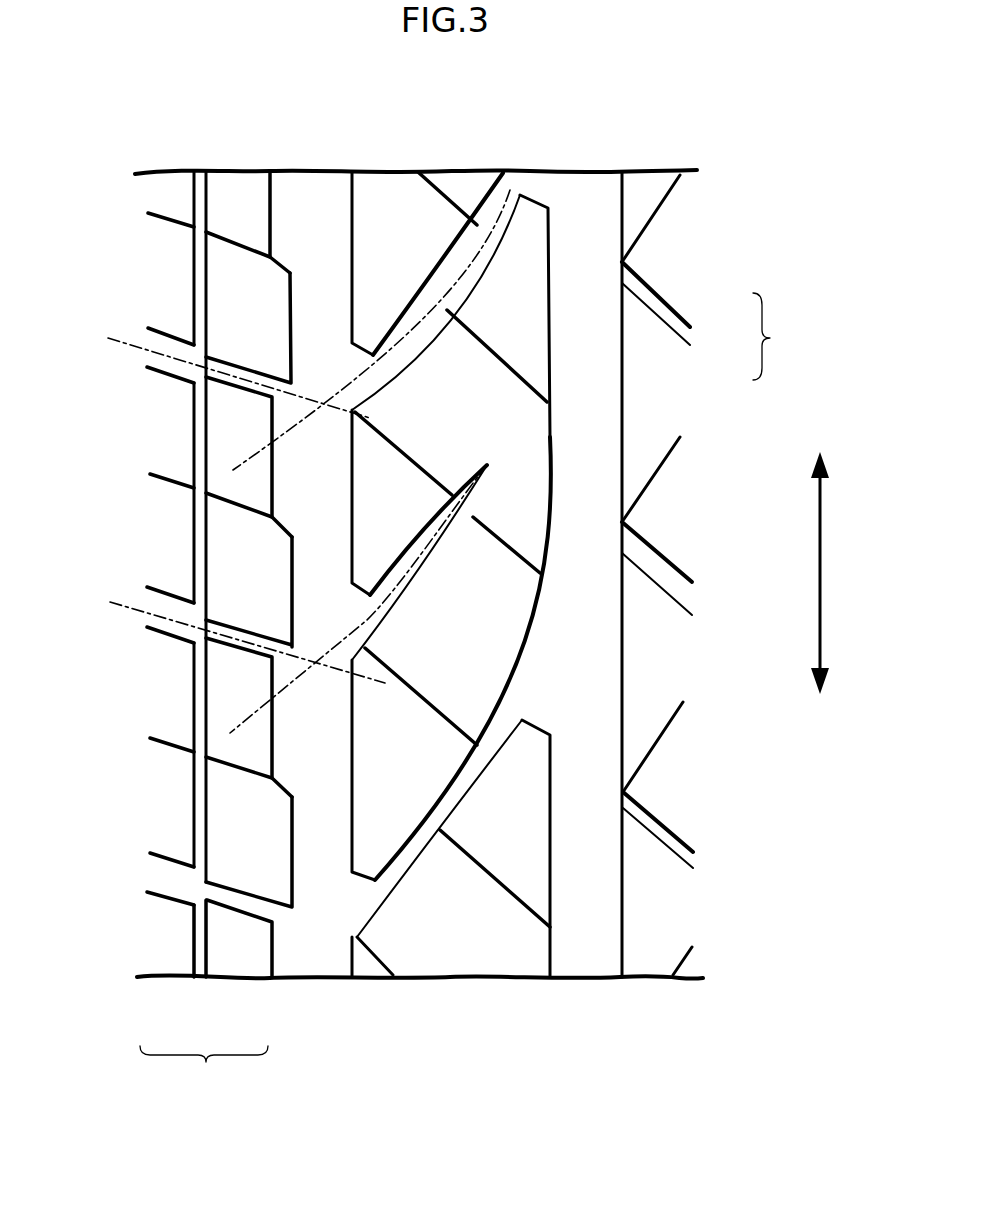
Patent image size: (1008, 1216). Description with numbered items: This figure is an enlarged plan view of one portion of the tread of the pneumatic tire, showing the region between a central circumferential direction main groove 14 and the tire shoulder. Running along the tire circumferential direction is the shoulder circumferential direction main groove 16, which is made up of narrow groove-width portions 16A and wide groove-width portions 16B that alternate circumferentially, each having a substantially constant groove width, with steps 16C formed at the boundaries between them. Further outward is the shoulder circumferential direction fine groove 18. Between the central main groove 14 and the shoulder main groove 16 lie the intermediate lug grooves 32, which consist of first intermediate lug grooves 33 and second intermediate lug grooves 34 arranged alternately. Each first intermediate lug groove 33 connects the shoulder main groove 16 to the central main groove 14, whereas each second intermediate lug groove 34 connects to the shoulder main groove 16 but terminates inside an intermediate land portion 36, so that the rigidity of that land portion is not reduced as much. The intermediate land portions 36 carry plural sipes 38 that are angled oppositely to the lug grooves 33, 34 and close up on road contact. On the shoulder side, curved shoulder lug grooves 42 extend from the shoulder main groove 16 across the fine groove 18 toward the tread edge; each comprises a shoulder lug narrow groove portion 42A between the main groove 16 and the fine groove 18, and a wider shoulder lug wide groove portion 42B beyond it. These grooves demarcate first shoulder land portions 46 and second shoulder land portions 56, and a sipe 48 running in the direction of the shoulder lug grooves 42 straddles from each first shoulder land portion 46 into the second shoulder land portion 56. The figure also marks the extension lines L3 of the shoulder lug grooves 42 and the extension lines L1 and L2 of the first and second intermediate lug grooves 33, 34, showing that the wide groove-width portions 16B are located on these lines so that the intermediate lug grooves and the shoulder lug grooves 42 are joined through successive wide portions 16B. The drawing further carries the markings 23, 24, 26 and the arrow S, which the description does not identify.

The central circumferential direction main groove 14 is at (597, 190).
The shoulder circumferential direction main groove 16 is at (327, 177).
The narrow groove-width portion 16A is at (299, 324).
The wide groove-width portion 16B is at (299, 237).
The step 16C is at (282, 265).
The shoulder circumferential direction fine groove 18 is at (197, 172).
The wide lateral groove 23 is at (659, 554).
The narrow lateral groove 24 is at (649, 283).
The groove end 26 is at (608, 258).
The intermediate lug groove 32 is at (779, 336).
The first intermediate lug groove 33 is at (480, 255).
The second intermediate lug groove 34 is at (482, 462).
The intermediate land portion 36 is at (563, 430).
The sipe 38 is at (444, 190).
The shoulder lug groove 42 is at (204, 1070).
The shoulder lug narrow groove portion 42A is at (236, 902).
The shoulder lug wide groove portion 42B is at (180, 882).
The first shoulder land portion 46 is at (305, 898).
The sipe 48 is at (232, 244).
The second shoulder land portion 56 is at (152, 868).
The extension line of the first intermediate lug grooves L1 is at (395, 379).
The extension line of the second intermediate lug grooves L2 is at (412, 597).
The extension line of the shoulder lug grooves L3 is at (128, 350).
The tire circumferential direction S is at (823, 565).